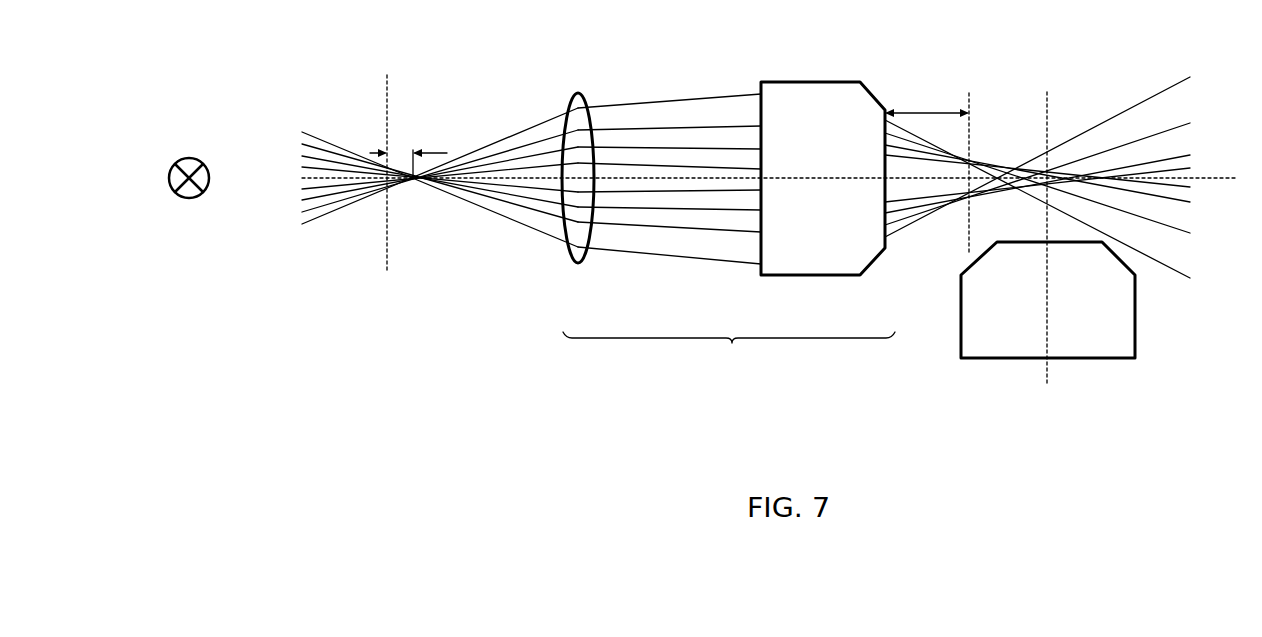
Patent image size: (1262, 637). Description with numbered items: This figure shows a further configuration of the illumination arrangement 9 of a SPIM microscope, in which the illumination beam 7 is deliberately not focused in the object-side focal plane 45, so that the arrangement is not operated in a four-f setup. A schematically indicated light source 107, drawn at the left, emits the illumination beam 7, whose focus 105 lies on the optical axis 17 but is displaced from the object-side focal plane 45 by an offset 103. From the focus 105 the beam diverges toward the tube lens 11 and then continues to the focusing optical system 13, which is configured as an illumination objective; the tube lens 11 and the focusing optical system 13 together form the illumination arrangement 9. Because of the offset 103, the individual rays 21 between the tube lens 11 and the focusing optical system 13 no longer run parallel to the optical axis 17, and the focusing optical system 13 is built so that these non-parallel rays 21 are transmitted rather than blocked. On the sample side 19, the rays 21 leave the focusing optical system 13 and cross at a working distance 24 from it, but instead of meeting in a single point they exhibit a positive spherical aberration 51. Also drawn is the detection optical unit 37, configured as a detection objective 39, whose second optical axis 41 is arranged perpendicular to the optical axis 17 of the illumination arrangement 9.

The illumination beam 7 is at (345, 217).
The illumination arrangement 9 is at (729, 355).
The tube lens 11 is at (578, 263).
The focusing optical system 13 is at (830, 81).
The optical axis 17 is at (302, 177).
The sample side 19 is at (985, 98).
The rays 21 is at (640, 103).
The working distance 24 is at (920, 111).
The detection optical unit 37 is at (1015, 300).
The detection objective 39 is at (961, 300).
The second optical axis 41 is at (1047, 373).
The object-side focal plane 45 is at (387, 75).
The spherical aberration 51 is at (1012, 159).
The offset 103 is at (440, 150).
The focus 105 is at (413, 182).
The light source 107 is at (190, 198).